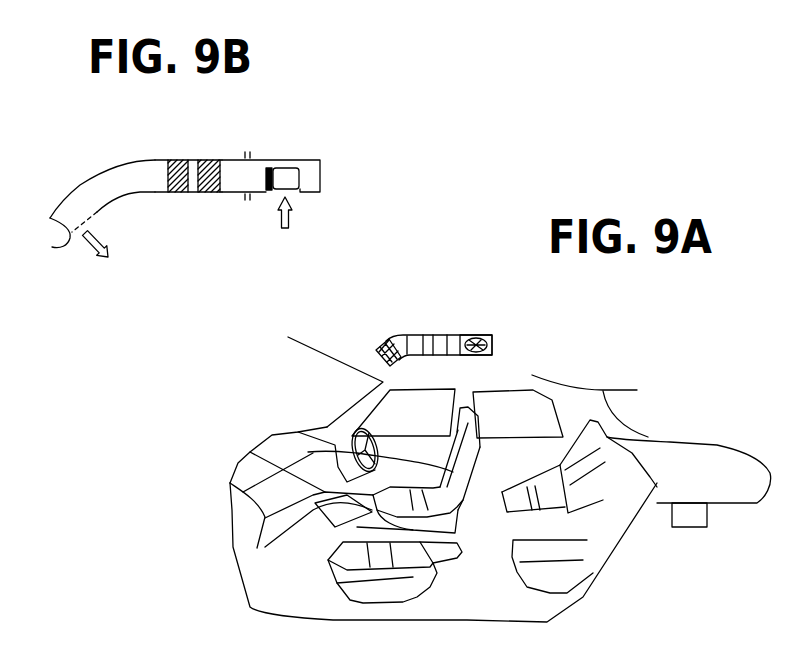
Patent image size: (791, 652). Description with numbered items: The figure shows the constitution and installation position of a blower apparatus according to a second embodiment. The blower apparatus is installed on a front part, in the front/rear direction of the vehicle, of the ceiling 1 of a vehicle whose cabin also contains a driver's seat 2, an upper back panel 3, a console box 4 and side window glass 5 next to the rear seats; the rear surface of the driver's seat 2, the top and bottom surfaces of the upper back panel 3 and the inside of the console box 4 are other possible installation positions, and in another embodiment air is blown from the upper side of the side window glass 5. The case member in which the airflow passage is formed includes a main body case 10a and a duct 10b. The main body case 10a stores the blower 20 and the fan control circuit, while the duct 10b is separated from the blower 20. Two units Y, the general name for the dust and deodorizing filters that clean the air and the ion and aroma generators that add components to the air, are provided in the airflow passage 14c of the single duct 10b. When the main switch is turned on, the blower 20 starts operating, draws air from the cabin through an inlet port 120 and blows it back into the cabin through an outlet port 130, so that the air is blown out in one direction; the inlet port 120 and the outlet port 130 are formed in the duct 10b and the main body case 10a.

In FIG. 9A, the ceiling 1 is at (332, 340).
In FIG. 9A, the driver's seat 2 is at (308, 452).
In FIG. 9A, the upper back panel 3 is at (714, 462).
In FIG. 9A, the console box 4 is at (263, 545).
In FIG. 9A, the side window glass 5 is at (518, 407).
In FIG. 9B, the main body case 10a is at (322, 171).
In FIG. 9B, the duct 10b is at (95, 173).
In FIG. 9B, the airflow passage 14c is at (135, 174).
In FIG. 9B, the blower 20 is at (290, 171).
In FIG. 9B, the inlet port 120 is at (277, 194).
In FIG. 9A, the inlet port 120 is at (472, 335).
In FIG. 9B, the outlet port 130 is at (73, 238).
In FIG. 9A, the outlet port 130 is at (380, 343).
In FIG. 9B, the unit Y is at (173, 194).